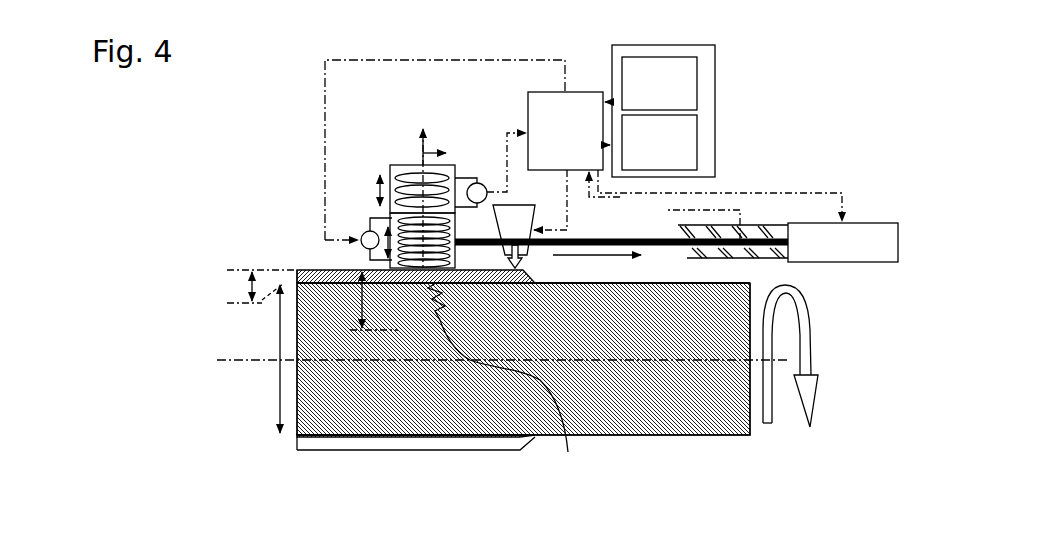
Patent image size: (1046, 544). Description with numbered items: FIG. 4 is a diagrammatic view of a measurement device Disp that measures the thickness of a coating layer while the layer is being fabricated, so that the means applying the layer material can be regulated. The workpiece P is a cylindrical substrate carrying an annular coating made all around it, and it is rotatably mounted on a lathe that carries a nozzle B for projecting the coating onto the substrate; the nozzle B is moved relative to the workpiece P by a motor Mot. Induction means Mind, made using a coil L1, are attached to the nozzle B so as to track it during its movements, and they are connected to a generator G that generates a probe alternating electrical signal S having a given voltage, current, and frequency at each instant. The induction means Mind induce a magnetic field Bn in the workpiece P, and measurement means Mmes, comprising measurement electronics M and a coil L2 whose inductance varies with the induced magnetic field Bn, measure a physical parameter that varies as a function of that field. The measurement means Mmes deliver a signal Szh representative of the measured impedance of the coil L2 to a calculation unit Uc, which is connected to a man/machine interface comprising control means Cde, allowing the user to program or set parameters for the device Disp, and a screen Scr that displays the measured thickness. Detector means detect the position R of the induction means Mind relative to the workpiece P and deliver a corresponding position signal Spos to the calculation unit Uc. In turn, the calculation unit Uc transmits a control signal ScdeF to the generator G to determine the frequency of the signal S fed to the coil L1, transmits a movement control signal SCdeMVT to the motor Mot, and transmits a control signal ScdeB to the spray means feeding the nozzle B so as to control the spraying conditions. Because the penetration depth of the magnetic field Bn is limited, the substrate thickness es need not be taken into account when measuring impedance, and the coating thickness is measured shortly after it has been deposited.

The workpiece P is at (420, 427).
The magnetic field Bn is at (504, 384).
The nozzle B is at (514, 236).
The motor Mot is at (843, 242).
The calculation unit Uc is at (565, 131).
The control means Cde is at (651, 83).
The screen Scr is at (650, 142).
The measurement means Mmes is at (408, 165).
The induction means Mind is at (390, 266).
The coil L1 is at (384, 217).
The coil L2 is at (386, 175).
The measurement electronics M is at (471, 192).
The generator G is at (370, 240).
The probe alternating electrical signal S is at (370, 216).
The measurement device Disp is at (238, 168).
The position R is at (424, 150).
The control signal ScdeF is at (445, 140).
The signal Szh is at (505, 162).
The control signal ScdeB is at (568, 200).
The position signal Spos is at (664, 206).
The movement control signal SCdeMVT is at (720, 195).
The substrate thickness es is at (271, 359).